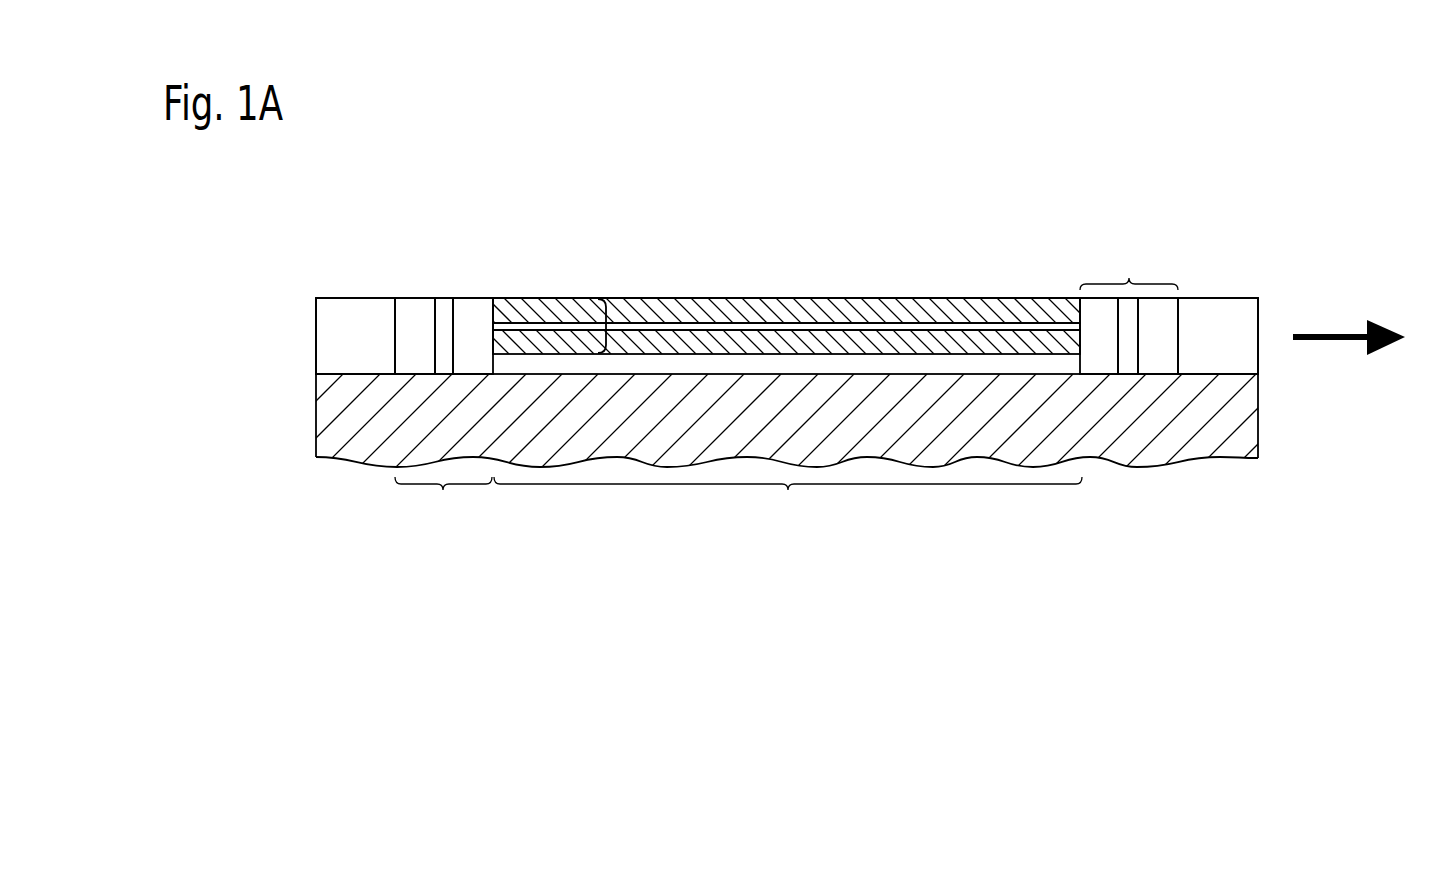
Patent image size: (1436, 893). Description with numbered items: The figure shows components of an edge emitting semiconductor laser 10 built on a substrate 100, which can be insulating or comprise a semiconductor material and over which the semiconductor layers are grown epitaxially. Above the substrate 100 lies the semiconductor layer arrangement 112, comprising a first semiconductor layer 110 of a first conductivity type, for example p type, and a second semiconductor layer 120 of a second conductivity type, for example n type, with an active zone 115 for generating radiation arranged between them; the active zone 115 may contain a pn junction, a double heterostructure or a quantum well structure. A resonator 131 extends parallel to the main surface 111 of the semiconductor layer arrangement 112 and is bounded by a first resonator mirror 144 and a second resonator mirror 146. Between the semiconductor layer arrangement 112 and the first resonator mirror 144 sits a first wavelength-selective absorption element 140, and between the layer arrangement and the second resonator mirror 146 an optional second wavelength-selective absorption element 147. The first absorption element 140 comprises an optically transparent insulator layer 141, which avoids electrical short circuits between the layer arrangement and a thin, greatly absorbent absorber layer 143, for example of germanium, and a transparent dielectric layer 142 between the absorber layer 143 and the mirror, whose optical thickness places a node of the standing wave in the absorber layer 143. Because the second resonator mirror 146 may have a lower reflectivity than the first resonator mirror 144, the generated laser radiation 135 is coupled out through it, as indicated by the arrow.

The semiconductor laser 10 is at (314, 232).
The substrate 100 is at (1245, 418).
The first semiconductor layer 110 is at (800, 347).
The main surface 111 is at (665, 298).
The semiconductor layer arrangement 112 is at (601, 327).
The active zone 115 is at (873, 330).
The second semiconductor layer 120 is at (728, 312).
The resonator 131 is at (788, 499).
The laser radiation 135 is at (1333, 332).
The first wavelength-selective absorption element 140 is at (443, 499).
The transparent insulator layer 141 is at (473, 309).
The transparent dielectric layer 142 is at (413, 309).
The absorber layer 143 is at (444, 309).
The first resonator mirror 144 is at (355, 309).
The second resonator mirror 146 is at (1217, 316).
The second wavelength-selective absorption element 147 is at (1129, 268).